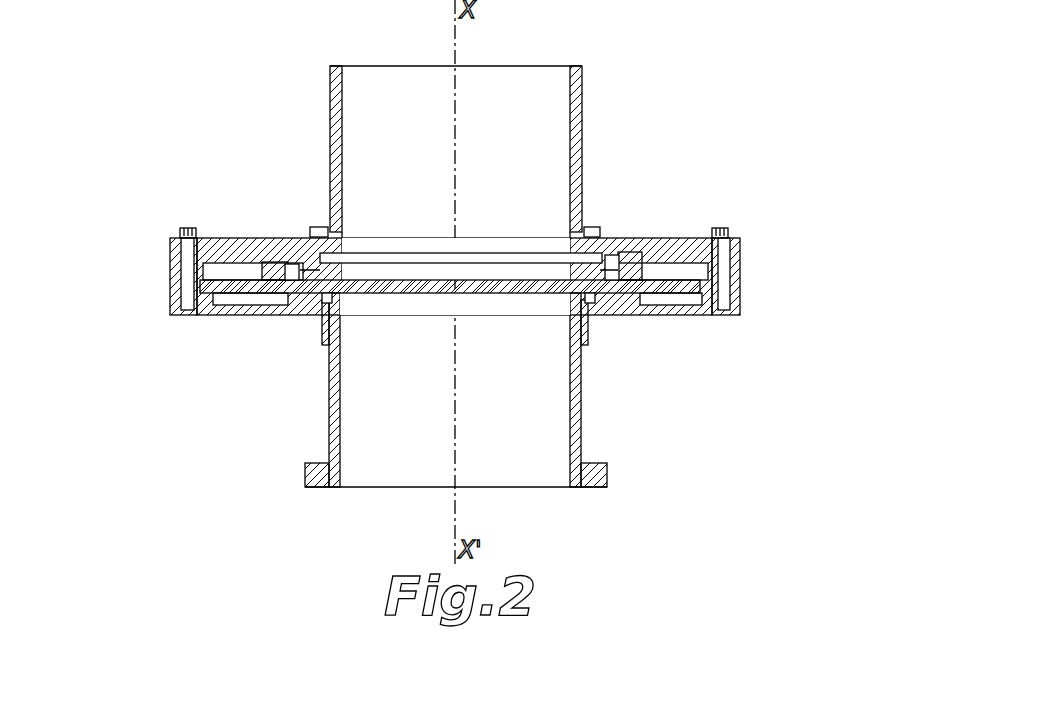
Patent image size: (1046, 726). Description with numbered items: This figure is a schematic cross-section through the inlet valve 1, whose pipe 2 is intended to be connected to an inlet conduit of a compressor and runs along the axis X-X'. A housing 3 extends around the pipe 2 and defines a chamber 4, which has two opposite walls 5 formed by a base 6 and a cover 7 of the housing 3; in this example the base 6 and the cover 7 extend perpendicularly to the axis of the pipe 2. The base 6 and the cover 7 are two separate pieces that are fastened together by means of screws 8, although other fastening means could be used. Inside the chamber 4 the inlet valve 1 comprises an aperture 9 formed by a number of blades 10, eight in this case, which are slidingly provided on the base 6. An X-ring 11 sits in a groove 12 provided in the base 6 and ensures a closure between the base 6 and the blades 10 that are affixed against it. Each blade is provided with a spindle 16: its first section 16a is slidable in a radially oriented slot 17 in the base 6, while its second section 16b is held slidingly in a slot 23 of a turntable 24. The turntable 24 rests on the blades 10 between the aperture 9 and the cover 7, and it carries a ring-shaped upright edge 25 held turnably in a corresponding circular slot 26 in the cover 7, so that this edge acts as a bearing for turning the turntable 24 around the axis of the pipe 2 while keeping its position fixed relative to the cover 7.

The inlet valve 1 is at (128, 72).
The pipe 2 is at (330, 96).
The housing 3 is at (116, 203).
The chamber 4 is at (230, 258).
The walls 5 is at (268, 270).
The base 6 is at (250, 305).
The cover 7 is at (690, 238).
The screws 8 is at (177, 232).
The aperture 9 is at (596, 312).
The blades 10 is at (395, 300).
The X-ring 11 is at (320, 318).
The groove 12 is at (333, 320).
The spindle 16 is at (300, 268).
The first section 16a is at (278, 296).
The second section 16b is at (285, 270).
The radially oriented slot 17 is at (235, 300).
The slot 23 is at (262, 268).
The turntable 24 is at (300, 232).
The ring-shaped upright edge 25 is at (345, 250).
The circular slot 26 is at (594, 238).